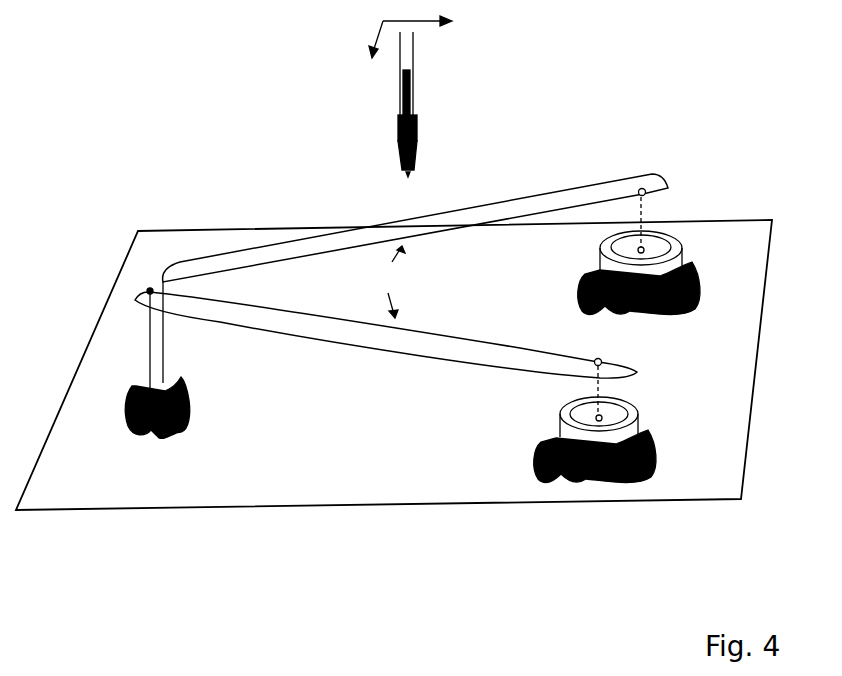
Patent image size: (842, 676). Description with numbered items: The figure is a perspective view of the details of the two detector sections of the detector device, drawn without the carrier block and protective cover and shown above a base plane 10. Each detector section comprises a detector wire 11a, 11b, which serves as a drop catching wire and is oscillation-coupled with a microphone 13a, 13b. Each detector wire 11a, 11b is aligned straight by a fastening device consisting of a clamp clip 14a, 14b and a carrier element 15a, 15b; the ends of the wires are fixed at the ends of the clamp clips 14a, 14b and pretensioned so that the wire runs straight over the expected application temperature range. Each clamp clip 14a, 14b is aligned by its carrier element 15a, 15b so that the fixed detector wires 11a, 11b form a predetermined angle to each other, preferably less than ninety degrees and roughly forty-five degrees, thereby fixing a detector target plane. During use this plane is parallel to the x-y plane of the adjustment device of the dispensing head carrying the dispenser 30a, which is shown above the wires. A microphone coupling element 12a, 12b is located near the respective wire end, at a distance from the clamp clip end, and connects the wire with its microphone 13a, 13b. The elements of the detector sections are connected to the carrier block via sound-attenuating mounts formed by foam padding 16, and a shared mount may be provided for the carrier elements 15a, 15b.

The base plate 10 is at (176, 485).
The detector wire 11a is at (371, 300).
The detector wire 11b is at (375, 263).
The microphone coupling element 12a is at (600, 391).
The microphone coupling element 12b is at (652, 205).
The microphone 13a is at (643, 421).
The microphone 13b is at (681, 256).
The clamp clip 14a is at (456, 363).
The clamp clip 14b is at (582, 193).
The carrier element 15a is at (150, 346).
The carrier element 15b is at (176, 347).
The foam padding 16 is at (712, 305).
The dispenser 30a is at (413, 87).